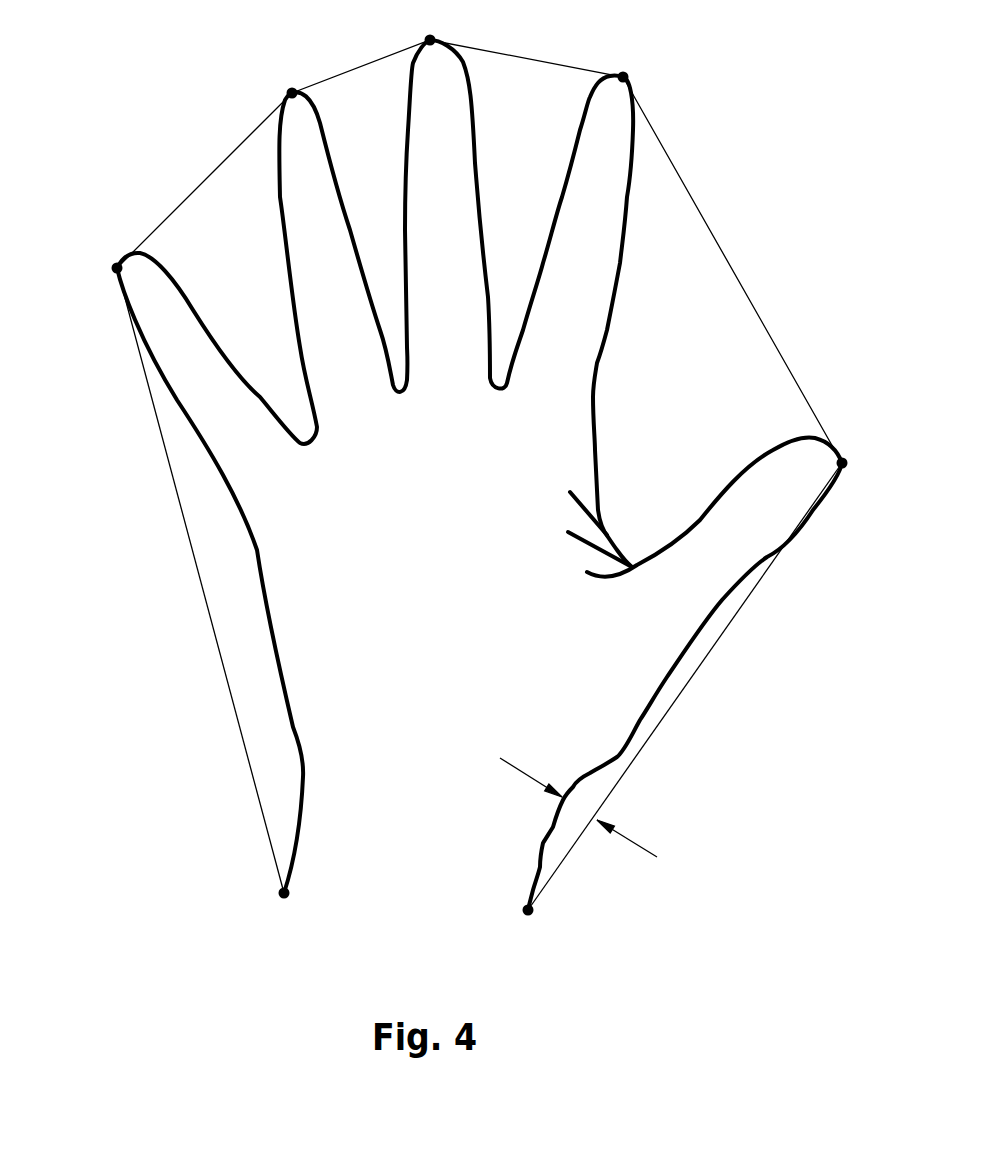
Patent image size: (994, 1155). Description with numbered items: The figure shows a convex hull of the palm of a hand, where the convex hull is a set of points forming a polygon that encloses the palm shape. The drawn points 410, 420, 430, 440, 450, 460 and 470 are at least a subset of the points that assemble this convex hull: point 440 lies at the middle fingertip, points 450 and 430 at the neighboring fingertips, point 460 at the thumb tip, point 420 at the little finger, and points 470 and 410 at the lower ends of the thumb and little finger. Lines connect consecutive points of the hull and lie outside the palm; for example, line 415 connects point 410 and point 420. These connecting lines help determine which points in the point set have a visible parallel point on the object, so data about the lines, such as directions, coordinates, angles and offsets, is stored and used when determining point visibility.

The point 410 is at (529, 912).
The line 415 is at (667, 717).
The point 420 is at (842, 462).
The point 430 is at (624, 76).
The point 440 is at (431, 38).
The point 450 is at (290, 92).
The point 460 is at (119, 265).
The point 470 is at (284, 895).